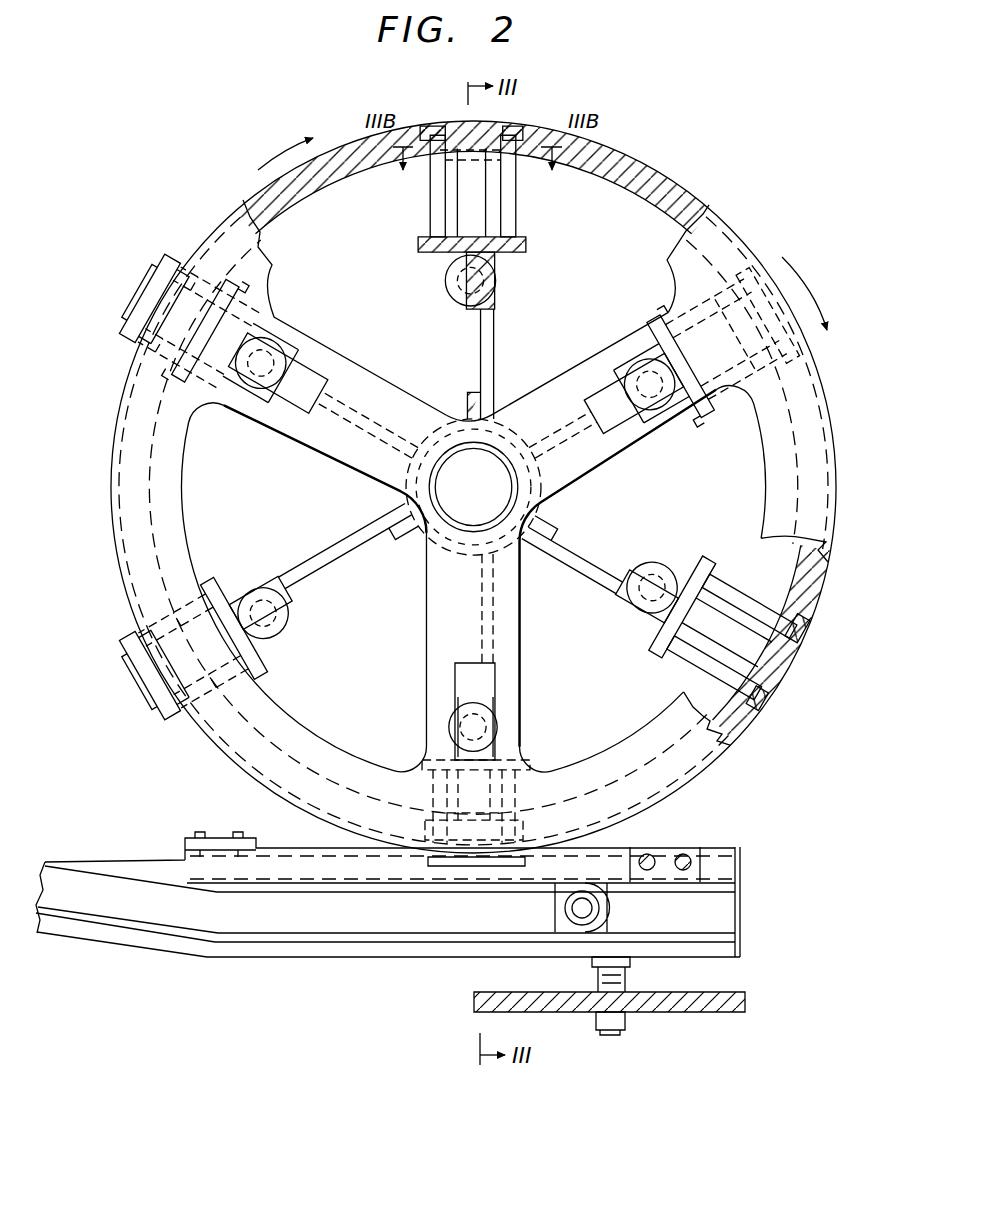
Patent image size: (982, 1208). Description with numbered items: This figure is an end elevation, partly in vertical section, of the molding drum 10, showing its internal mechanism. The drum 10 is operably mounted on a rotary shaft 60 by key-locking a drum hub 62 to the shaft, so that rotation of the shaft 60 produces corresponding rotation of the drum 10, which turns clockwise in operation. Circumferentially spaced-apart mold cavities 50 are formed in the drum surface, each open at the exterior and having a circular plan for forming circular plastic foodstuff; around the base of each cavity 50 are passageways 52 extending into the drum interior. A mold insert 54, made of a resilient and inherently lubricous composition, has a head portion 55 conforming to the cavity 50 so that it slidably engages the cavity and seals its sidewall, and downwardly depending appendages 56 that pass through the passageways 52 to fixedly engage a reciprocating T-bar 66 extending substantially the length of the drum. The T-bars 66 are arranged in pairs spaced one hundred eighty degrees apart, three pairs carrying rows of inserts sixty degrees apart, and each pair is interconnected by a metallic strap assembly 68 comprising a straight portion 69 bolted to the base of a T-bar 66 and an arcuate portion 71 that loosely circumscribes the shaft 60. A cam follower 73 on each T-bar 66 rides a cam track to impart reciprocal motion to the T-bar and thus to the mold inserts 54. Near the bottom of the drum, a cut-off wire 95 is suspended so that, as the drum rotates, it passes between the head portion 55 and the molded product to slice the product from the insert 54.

The molding drum 10 is at (630, 152).
The mold cavity 50 is at (503, 135).
The passageways 52 is at (505, 160).
The mold insert 54 is at (427, 192).
The head portion 55 is at (150, 300).
The appendages 56 is at (683, 660).
The rotary shaft 60 is at (498, 497).
The drum hub 62 is at (585, 475).
The T-bar 66 is at (510, 250).
The strap assembly 68 is at (494, 296).
The straight portion 69 is at (494, 322).
The arcuate portion 71 is at (394, 518).
The cam follower 73 is at (450, 285).
The cut-off wire 95 is at (478, 868).